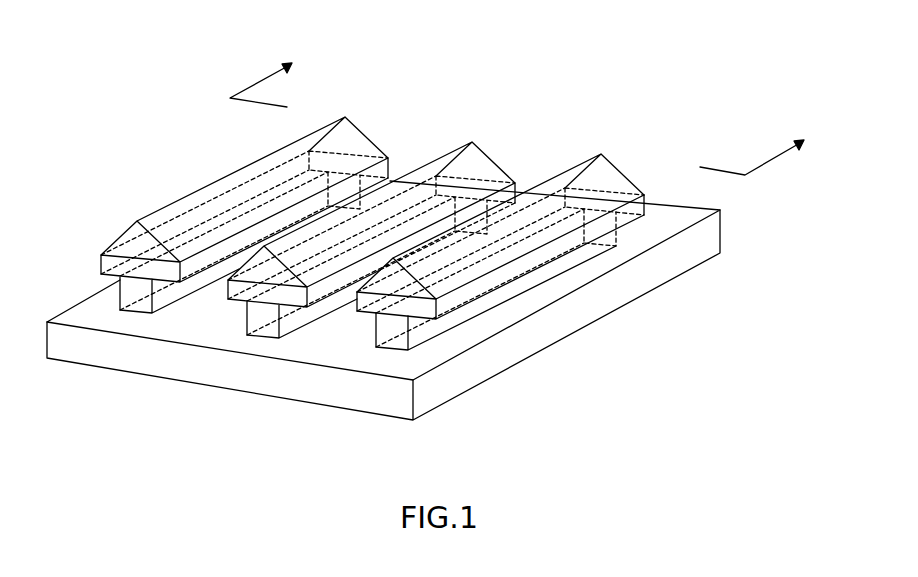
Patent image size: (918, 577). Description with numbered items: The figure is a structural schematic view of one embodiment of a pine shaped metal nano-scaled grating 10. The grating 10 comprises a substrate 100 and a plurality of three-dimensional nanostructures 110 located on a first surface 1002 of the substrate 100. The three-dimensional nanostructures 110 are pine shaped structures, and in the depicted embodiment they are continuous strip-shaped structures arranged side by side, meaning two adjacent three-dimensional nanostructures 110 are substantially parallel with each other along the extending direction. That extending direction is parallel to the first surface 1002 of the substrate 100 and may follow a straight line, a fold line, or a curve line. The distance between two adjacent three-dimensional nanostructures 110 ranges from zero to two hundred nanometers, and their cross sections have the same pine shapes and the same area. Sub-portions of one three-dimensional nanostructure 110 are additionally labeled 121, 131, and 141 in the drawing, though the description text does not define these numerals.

The pine shaped metal nano-scaled grating 10 is at (531, 82).
The substrate 100 is at (482, 370).
The first surface 1002 is at (333, 343).
The three-dimensional nanostructure 110 is at (795, 270).
The pedestal / lower fin portion 121 is at (490, 303).
The middle fin portion 131 is at (490, 285).
The top cap portion of fin 141 is at (604, 160).